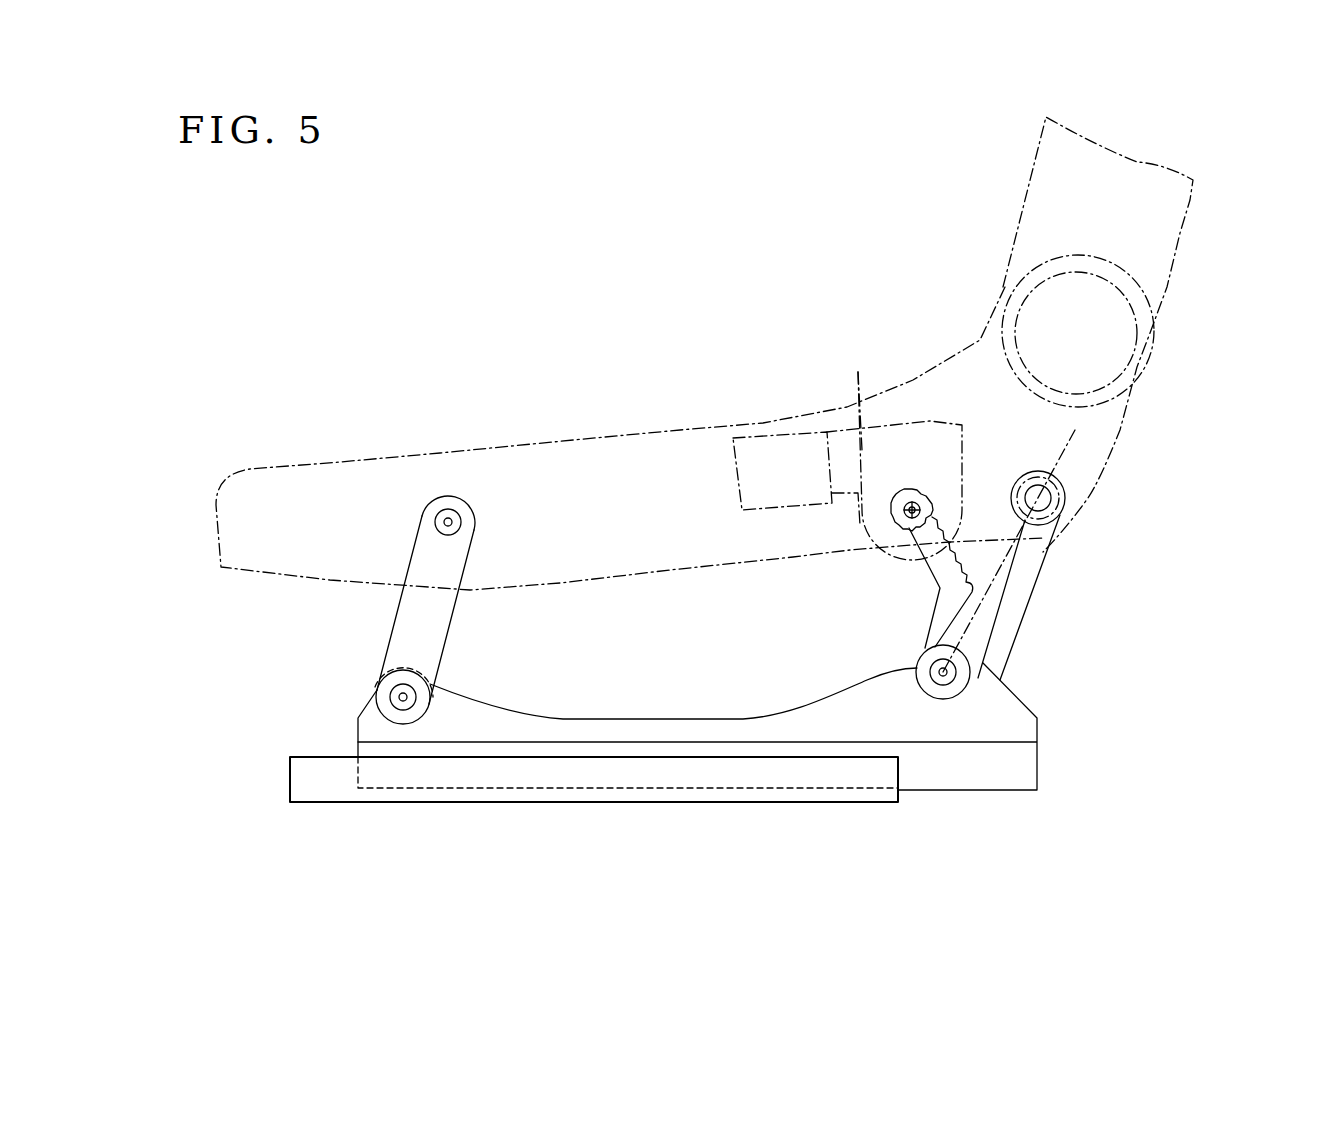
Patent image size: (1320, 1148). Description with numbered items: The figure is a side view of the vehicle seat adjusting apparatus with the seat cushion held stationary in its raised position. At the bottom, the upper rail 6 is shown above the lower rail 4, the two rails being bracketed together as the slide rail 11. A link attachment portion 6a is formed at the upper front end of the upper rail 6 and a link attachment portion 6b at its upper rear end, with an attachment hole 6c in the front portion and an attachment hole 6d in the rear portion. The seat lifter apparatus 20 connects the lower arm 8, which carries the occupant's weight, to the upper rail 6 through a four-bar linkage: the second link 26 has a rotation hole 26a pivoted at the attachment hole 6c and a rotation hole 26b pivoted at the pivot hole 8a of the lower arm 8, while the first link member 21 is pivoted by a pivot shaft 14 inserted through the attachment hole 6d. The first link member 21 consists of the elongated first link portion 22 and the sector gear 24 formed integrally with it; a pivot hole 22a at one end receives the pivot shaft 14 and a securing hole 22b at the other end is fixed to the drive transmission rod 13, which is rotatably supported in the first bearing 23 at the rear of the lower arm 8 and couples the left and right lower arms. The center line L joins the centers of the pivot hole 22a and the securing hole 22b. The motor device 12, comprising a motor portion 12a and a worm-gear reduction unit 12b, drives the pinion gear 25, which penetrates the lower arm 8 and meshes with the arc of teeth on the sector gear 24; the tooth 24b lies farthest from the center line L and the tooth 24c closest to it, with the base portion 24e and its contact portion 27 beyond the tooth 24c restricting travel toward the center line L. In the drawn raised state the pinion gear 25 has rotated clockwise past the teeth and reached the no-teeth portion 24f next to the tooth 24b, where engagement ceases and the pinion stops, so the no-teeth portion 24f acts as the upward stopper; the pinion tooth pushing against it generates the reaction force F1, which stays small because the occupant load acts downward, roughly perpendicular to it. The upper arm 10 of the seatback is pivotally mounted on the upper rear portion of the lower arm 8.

The lower rail 4 is at (840, 790).
The upper rail 6 is at (925, 727).
The link attachment portion 6a is at (385, 688).
The link attachment portion 6b is at (930, 642).
The attachment hole 6c is at (433, 697).
The attachment hole 6d is at (975, 680).
The lower arm 8 is at (573, 450).
The pivot hole 8a is at (490, 480).
The upper arm 10 is at (1182, 223).
The slide rail 11 is at (835, 872).
The motor device 12 is at (749, 422).
The motor portion 12a is at (780, 452).
The reduction unit 12b is at (862, 394).
The drive transmission rod 13 is at (1063, 487).
The pivot shaft 14 is at (446, 516).
The seat lifter apparatus 20 is at (1004, 421).
The first link member 21 is at (1030, 550).
The first link portion 22 is at (1017, 573).
The pivot hole 22a is at (930, 677).
The securing hole 22b is at (1052, 479).
The first bearing 23 is at (1067, 508).
The sector gear 24 is at (953, 572).
The tooth 24b is at (900, 548).
The tooth 24c is at (973, 587).
The base portion 24e is at (977, 592).
The no-teeth portion 24f is at (930, 500).
The pinion gear 25 is at (890, 517).
The second link 26 is at (397, 613).
The rotation hole 26a is at (390, 700).
The rotation hole 26b is at (445, 507).
The contact portion 27 is at (1000, 603).
The reaction force F1 is at (900, 512).
The center line L is at (975, 640).